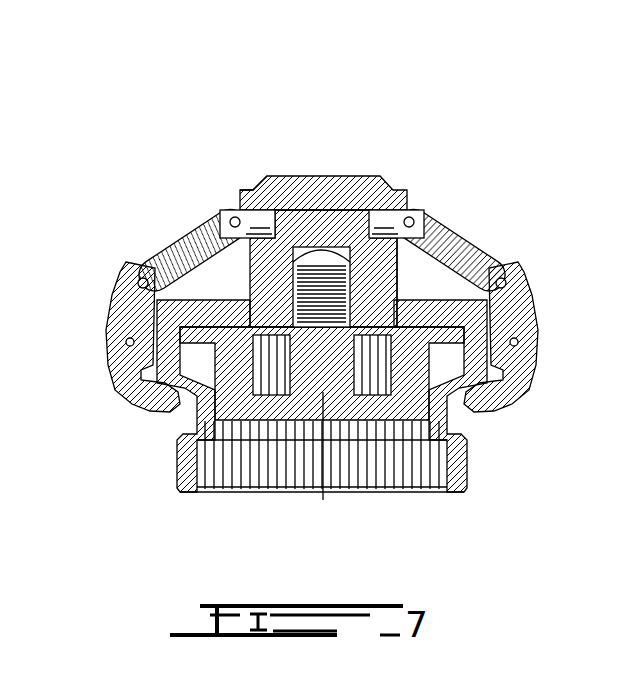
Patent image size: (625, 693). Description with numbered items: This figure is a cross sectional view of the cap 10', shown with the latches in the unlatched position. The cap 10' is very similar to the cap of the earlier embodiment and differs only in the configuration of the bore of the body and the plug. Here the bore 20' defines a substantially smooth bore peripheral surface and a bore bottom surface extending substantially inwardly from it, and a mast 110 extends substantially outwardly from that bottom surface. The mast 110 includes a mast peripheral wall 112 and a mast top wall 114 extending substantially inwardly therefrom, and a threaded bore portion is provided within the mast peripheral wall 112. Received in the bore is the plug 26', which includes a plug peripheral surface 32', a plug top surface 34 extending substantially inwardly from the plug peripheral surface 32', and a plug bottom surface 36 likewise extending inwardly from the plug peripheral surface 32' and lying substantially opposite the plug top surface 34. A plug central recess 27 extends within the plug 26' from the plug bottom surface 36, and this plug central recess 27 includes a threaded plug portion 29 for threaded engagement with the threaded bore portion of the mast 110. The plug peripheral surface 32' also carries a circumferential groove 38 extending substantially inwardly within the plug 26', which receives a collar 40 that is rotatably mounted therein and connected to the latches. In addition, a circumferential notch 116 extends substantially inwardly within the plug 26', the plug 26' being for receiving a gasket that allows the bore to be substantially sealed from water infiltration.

The cap 10' is at (78, 139).
The bore 20' is at (290, 403).
The plug 26' is at (348, 189).
The plug central recess 27 is at (342, 256).
The threaded plug portion 29 is at (318, 252).
The plug peripheral surface 32' is at (486, 251).
The plug top surface 34 is at (320, 176).
The plug bottom surface 36 is at (505, 398).
The circumferential groove 38 is at (248, 182).
The collar 40 is at (235, 222).
The mast 110 is at (318, 385).
The mast peripheral wall 112 is at (394, 338).
The mast top wall 114 is at (337, 395).
The circumferential notch 116 is at (168, 372).